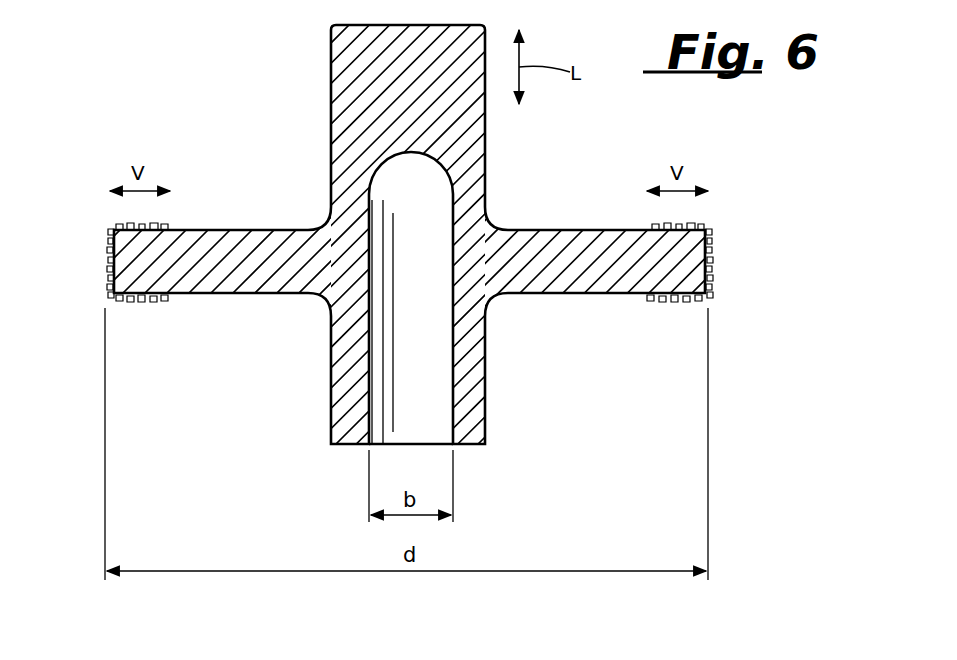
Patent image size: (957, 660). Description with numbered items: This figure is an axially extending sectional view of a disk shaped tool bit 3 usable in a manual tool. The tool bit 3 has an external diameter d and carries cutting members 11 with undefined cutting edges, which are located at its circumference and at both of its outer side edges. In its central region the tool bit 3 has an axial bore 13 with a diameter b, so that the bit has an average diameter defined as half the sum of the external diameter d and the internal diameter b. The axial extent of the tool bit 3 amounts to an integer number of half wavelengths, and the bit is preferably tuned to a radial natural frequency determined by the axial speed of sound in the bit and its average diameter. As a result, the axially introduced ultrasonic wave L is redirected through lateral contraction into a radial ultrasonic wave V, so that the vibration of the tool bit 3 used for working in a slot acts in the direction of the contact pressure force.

The tool bit 3 is at (350, 71).
The cutting members 11 is at (106, 268).
The axial bore 13 is at (432, 372).